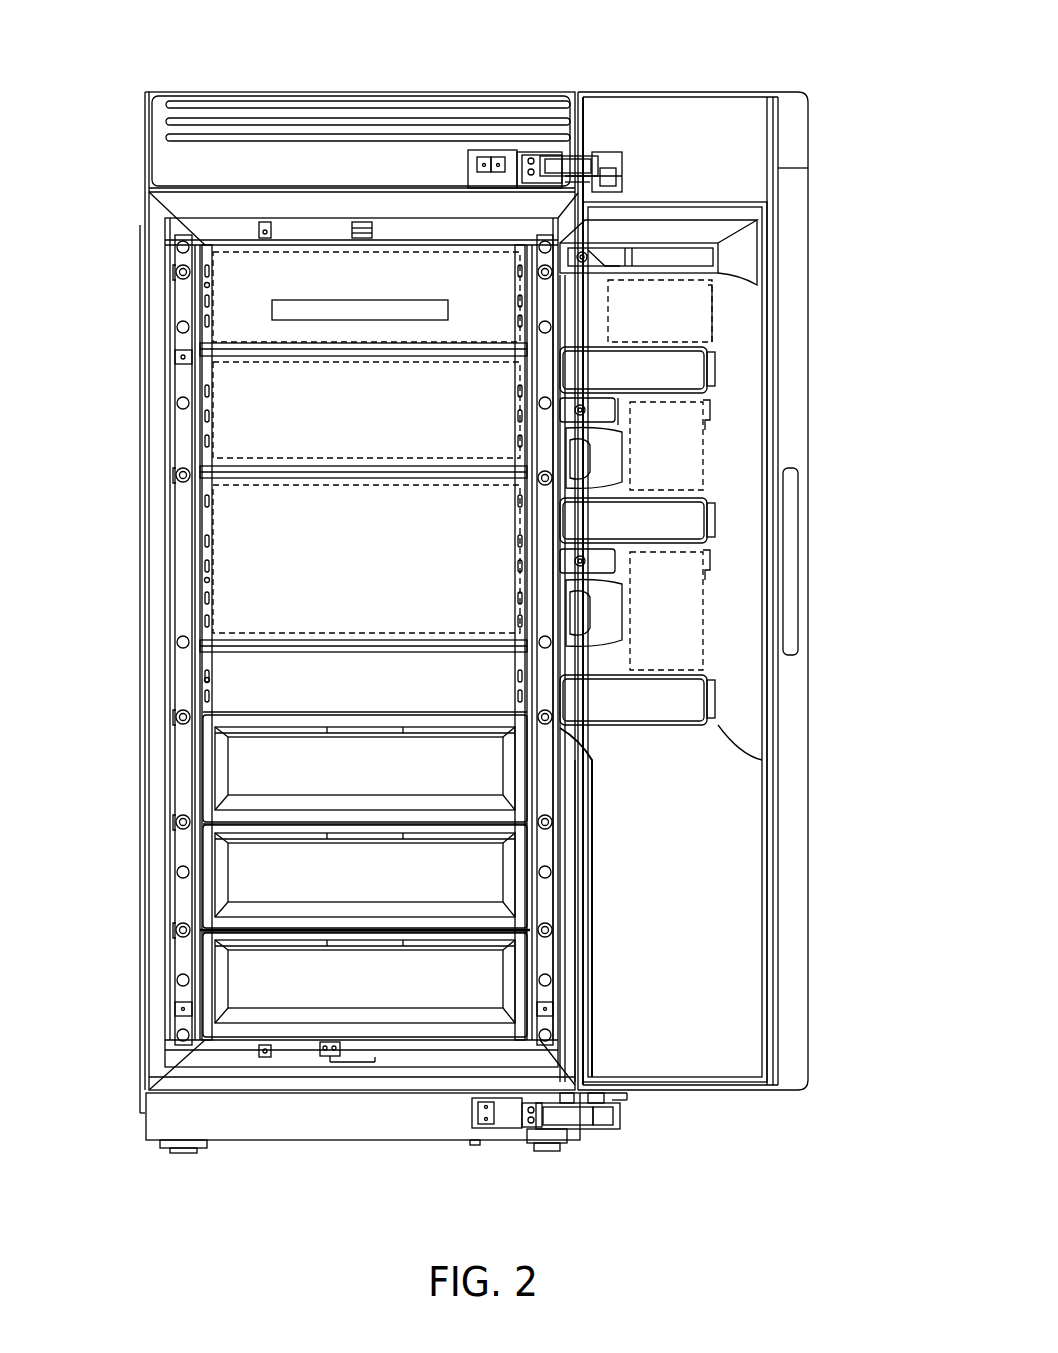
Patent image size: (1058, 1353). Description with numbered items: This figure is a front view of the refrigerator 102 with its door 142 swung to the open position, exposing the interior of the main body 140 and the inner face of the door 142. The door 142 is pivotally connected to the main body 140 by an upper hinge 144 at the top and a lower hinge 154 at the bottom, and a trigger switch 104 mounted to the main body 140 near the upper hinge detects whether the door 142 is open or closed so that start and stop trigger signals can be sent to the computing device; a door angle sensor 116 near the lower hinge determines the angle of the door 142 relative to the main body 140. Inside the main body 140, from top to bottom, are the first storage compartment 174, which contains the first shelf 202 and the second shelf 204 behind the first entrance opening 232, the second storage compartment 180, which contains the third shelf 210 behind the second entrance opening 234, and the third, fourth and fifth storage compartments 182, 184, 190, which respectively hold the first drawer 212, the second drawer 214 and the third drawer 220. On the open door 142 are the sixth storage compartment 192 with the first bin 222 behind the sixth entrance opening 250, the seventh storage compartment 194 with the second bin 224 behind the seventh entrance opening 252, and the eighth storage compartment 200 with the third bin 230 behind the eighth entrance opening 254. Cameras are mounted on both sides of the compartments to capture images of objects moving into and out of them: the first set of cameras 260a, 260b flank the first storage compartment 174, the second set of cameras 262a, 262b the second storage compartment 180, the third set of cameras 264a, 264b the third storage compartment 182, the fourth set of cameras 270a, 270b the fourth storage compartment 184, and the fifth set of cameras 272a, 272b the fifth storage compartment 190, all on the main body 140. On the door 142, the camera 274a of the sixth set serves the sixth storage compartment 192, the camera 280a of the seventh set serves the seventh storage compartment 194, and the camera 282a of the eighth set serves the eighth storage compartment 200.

The refrigerator 102 is at (672, 52).
The trigger switch 104 is at (490, 160).
The door angle sensor 116 is at (565, 1108).
The main body 140 is at (190, 97).
The door 142 is at (733, 591).
The upper hinge 144 is at (562, 165).
The lower hinge 154 is at (553, 1115).
The first storage compartment 174 is at (376, 418).
The second storage compartment 180 is at (376, 570).
The third storage compartment 182 is at (376, 778).
The fourth storage compartment 184 is at (376, 883).
The fifth storage compartment 190 is at (376, 988).
The sixth storage compartment 192 is at (673, 318).
The seventh storage compartment 194 is at (683, 461).
The eighth storage compartment 200 is at (683, 620).
The first shelf 202 is at (365, 360).
The second shelf 204 is at (345, 478).
The third shelf 210 is at (365, 640).
The first drawer 212 is at (235, 717).
The second drawer 214 is at (235, 830).
The third drawer 220 is at (235, 937).
The first bin 222 is at (678, 350).
The second bin 224 is at (680, 498).
The third bin 230 is at (676, 676).
The first entrance opening 232 is at (180, 247).
The second entrance opening 234 is at (213, 527).
The sixth entrance opening 250 is at (712, 292).
The seventh entrance opening 252 is at (706, 418).
The eighth entrance opening 254 is at (706, 568).
The first set of cameras 260a is at (178, 272).
The first set of cameras 260b is at (540, 272).
The second set of cameras 262a is at (178, 474).
The second set of cameras 262b is at (540, 480).
The third set of cameras 264a is at (178, 718).
The third set of cameras 264b is at (540, 720).
The fourth set of cameras 270a is at (178, 823).
The fourth set of cameras 270b is at (540, 825).
The fifth set of cameras 272a is at (178, 931).
The fifth set of cameras 272b is at (540, 933).
The sixth set of cameras 274a is at (592, 258).
The seventh set of cameras 280a is at (582, 410).
The eighth set of cameras 282a is at (582, 562).